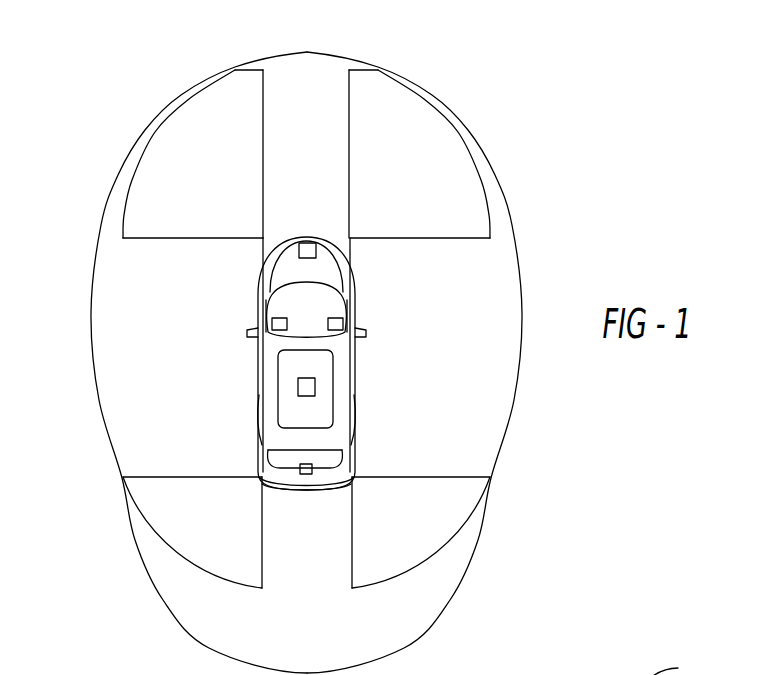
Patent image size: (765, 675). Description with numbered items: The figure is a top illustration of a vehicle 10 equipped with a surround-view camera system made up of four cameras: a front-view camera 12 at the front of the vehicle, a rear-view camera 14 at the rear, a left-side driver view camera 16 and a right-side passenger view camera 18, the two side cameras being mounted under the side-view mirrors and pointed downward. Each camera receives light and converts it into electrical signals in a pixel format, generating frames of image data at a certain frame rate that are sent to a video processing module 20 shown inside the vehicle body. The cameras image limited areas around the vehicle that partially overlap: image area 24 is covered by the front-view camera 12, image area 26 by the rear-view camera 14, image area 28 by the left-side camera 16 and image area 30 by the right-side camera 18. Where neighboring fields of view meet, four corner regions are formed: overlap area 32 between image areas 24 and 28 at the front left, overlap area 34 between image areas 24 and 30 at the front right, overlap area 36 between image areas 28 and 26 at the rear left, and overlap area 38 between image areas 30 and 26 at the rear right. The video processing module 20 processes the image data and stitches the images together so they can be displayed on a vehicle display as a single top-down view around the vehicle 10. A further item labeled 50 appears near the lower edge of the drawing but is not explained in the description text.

The vehicle 10 is at (569, 165).
The front-view camera 12 is at (308, 240).
The rear-view camera 14 is at (308, 484).
The left-side driver view camera 16 is at (272, 322).
The right-side passenger view camera 18 is at (344, 322).
The video processing module 20 is at (298, 388).
The image area 24 is at (314, 77).
The image area 26 is at (300, 637).
The image area 28 is at (120, 370).
The image area 30 is at (472, 403).
The overlap area 32 is at (182, 158).
The overlap area 34 is at (436, 136).
The overlap area 36 is at (195, 527).
The overlap area 38 is at (397, 552).
The object 50 is at (677, 663).